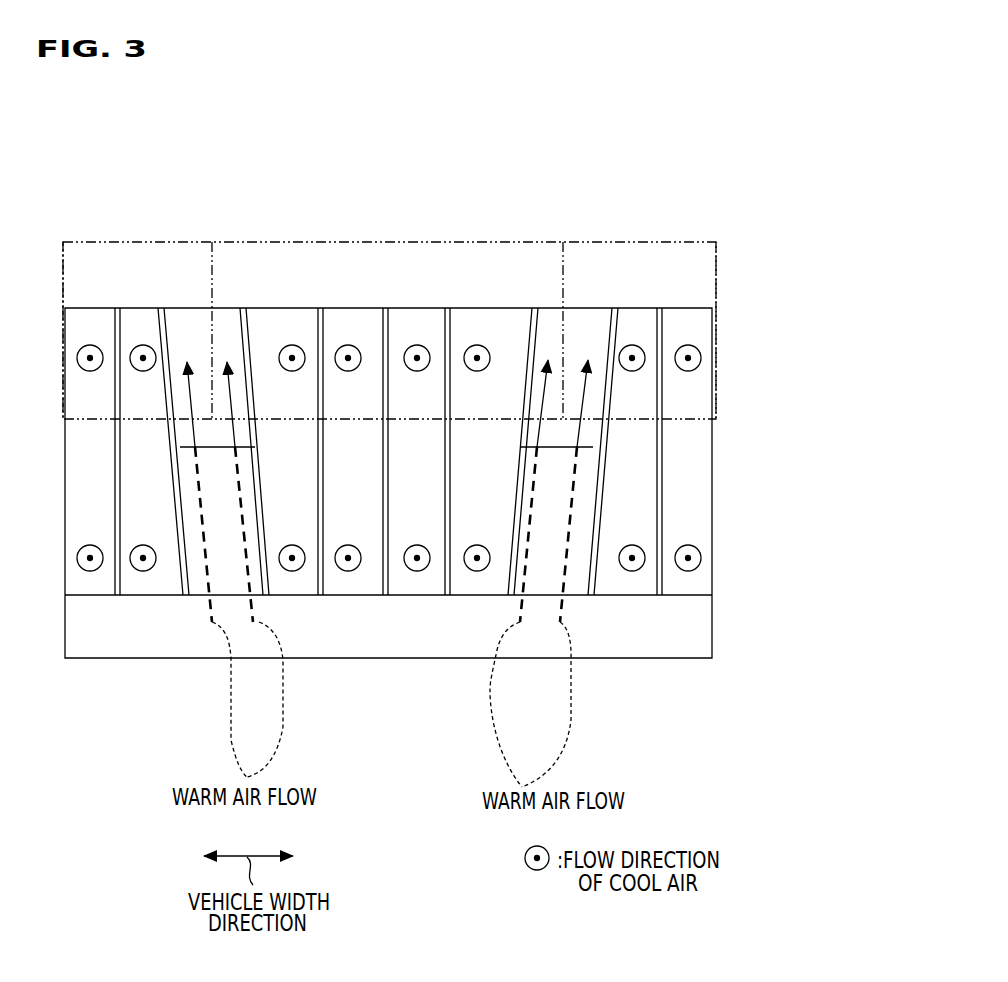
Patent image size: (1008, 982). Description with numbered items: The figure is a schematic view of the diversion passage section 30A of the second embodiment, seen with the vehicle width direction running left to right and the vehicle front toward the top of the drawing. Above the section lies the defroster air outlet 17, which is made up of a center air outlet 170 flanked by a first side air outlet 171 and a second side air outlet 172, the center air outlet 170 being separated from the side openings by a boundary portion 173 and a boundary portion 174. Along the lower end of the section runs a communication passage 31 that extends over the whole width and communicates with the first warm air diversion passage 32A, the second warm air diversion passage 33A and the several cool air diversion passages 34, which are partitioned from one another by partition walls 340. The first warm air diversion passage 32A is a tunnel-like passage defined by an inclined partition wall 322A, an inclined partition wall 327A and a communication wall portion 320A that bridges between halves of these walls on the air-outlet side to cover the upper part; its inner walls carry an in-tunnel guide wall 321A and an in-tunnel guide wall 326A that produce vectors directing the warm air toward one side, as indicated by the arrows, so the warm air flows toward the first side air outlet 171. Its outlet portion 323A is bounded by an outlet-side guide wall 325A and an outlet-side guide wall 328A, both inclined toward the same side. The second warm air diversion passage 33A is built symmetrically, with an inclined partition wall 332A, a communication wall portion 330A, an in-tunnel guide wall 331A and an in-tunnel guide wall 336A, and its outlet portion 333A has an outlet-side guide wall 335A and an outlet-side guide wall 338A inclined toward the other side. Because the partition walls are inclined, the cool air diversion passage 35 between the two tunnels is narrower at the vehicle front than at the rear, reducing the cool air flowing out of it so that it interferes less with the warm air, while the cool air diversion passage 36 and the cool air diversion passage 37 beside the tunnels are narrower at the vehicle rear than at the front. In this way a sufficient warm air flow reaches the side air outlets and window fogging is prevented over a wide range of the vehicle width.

The defroster air outlet 17 is at (713, 240).
The center air outlet 170 is at (405, 243).
The first side air outlet 171 is at (76, 240).
The second side air outlet 172 is at (690, 240).
The boundary portion 173 is at (210, 277).
The boundary portion 174 is at (564, 276).
The diversion passage section 30A is at (716, 455).
The communication passage 31 is at (657, 647).
The first warm air diversion passage 32A is at (237, 577).
The second warm air diversion passage 33A is at (547, 578).
The cool air diversion passage 34 is at (83, 480).
The cool air diversion passage 35 is at (140, 510).
The cool air diversion passage 36 is at (300, 583).
The cool air diversion passage 37 is at (468, 587).
The partition wall 340 is at (318, 308).
The communication wall portion 320A is at (203, 580).
The in-tunnel guide wall 321A is at (265, 555).
The partition wall 322A is at (250, 370).
The outlet portion 323A is at (258, 420).
The outlet-side guide wall 325A is at (238, 340).
The in-tunnel guide wall 326A is at (197, 527).
The partition wall 327A is at (187, 547).
The outlet-side guide wall 328A is at (174, 328).
The communication wall portion 330A is at (533, 580).
The in-tunnel guide wall 331A is at (512, 560).
The partition wall 332A is at (522, 420).
The outlet portion 333A is at (530, 433).
The outlet-side guide wall 335A is at (533, 340).
The in-tunnel guide wall 336A is at (575, 560).
The outlet-side guide wall 338A is at (604, 332).